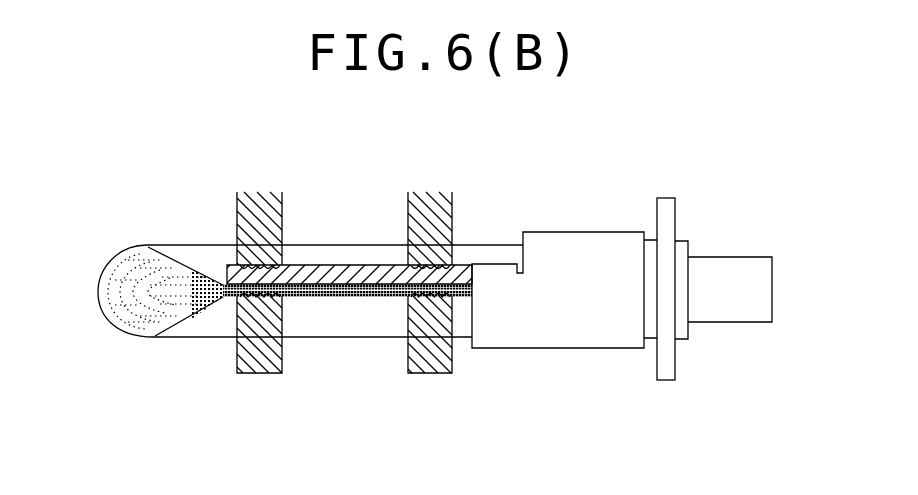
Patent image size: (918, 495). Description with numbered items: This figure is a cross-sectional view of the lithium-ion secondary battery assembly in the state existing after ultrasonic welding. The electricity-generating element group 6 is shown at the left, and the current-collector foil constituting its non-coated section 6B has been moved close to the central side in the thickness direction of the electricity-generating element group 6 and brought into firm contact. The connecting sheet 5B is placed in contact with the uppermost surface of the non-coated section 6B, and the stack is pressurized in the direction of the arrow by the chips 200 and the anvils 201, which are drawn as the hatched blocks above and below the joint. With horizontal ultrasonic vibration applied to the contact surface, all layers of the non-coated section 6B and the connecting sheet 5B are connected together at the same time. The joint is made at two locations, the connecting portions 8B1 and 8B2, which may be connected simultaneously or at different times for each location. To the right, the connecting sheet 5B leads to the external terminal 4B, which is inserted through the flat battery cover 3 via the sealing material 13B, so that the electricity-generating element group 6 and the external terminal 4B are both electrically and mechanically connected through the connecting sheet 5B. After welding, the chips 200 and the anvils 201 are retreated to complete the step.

The electricity-generating element group 6 is at (203, 245).
The non-coated section 6B is at (200, 272).
The anvils 201 is at (237, 205).
The chips 200 is at (282, 352).
The connecting portion 8B2 is at (268, 265).
The connecting portion 8B1 is at (426, 265).
The connecting sheet 5B is at (540, 232).
The battery cover 3 is at (665, 382).
The sealing material 13B is at (682, 342).
The external terminal 4B is at (730, 257).